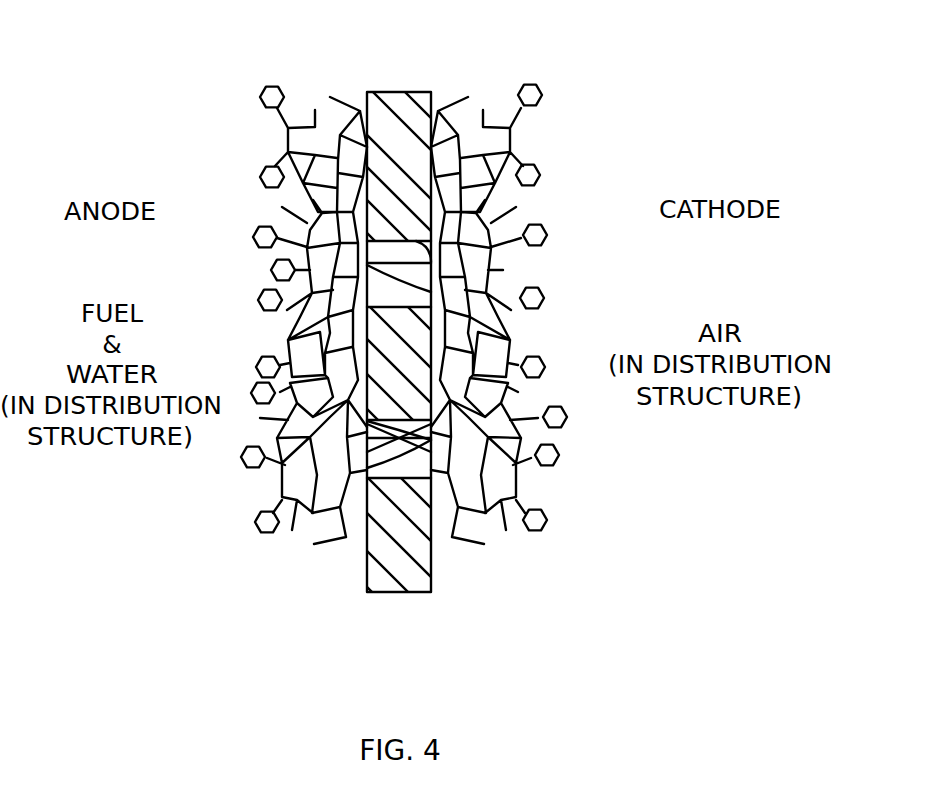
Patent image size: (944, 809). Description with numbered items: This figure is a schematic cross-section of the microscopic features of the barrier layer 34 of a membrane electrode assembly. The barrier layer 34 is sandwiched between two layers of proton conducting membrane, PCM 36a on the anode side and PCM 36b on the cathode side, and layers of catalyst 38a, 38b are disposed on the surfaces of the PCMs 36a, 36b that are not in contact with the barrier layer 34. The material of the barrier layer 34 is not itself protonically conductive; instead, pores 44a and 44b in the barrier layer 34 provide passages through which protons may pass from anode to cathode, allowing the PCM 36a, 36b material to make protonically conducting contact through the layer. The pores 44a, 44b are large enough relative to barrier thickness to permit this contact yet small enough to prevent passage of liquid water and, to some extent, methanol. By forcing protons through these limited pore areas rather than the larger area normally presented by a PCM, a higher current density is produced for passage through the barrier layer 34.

The barrier layer 34 is at (432, 587).
The PCM layer 36a is at (347, 96).
The PCM layer 36b is at (463, 97).
The catalyst layer 38a is at (275, 85).
The catalyst layer 38b is at (533, 85).
The pore 44a is at (431, 263).
The pore 44b is at (431, 439).